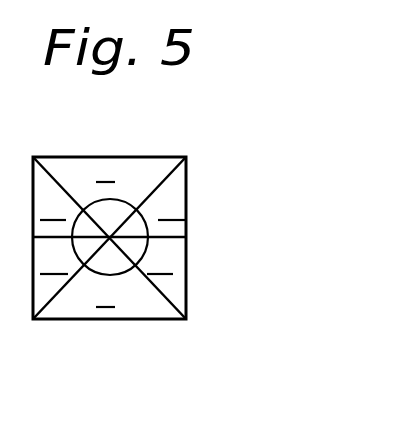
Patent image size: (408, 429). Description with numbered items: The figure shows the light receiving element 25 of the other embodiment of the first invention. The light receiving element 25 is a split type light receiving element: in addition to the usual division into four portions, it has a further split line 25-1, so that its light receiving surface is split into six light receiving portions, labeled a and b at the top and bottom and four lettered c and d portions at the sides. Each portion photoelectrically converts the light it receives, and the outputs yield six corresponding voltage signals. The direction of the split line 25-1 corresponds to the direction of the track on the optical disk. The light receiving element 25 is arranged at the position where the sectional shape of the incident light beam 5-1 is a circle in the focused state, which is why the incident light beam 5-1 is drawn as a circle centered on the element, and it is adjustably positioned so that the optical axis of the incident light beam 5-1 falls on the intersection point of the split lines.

The light receiving element 25 is at (207, 155).
The split line 25-1 is at (173, 238).
The incident light beam 5-1 is at (125, 199).